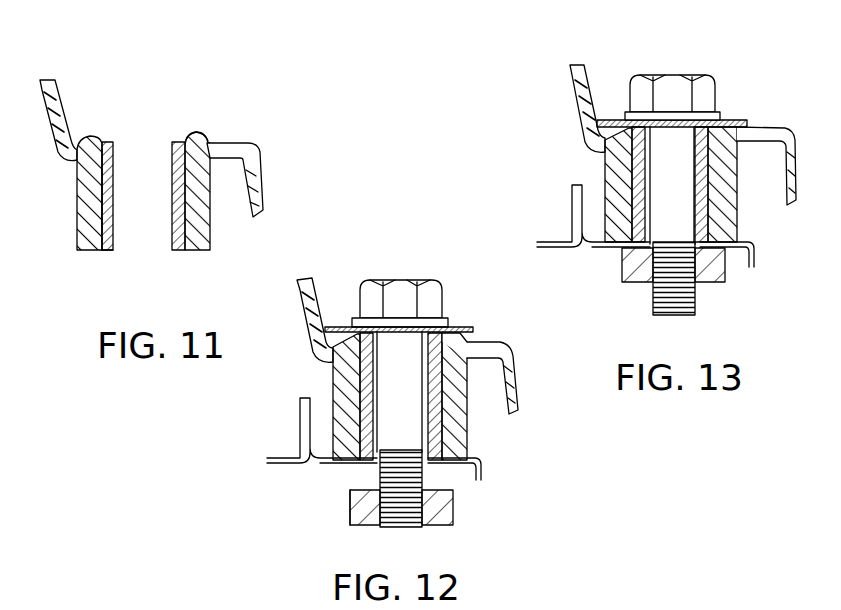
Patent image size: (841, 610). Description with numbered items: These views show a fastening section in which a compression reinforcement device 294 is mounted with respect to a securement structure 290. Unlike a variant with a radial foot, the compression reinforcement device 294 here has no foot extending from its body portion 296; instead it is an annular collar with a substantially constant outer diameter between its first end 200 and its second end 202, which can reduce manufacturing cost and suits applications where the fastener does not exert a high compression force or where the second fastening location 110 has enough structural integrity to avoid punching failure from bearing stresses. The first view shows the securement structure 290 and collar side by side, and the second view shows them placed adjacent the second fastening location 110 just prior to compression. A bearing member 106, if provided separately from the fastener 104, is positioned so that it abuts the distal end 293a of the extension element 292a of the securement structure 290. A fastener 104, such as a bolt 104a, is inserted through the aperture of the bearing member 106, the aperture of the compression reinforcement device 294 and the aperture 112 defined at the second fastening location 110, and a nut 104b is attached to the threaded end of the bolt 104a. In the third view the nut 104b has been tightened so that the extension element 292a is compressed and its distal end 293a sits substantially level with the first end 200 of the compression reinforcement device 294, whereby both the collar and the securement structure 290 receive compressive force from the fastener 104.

In FIG. 11, the securement structure 290 is at (80, 126).
In FIG. 12, the securement structure 290 is at (317, 368).
In FIG. 13, the securement structure 290 is at (612, 95).
In FIG. 11, the extension element 292a is at (188, 124).
In FIG. 12, the extension element 292a is at (487, 338).
In FIG. 13, the extension element 292a is at (762, 127).
In FIG. 11, the distal end 293a is at (200, 134).
In FIG. 12, the distal end 293a is at (340, 327).
In FIG. 13, the distal end 293a is at (726, 120).
In FIG. 11, the first end 200 is at (111, 141).
In FIG. 12, the first end 200 is at (401, 396).
In FIG. 13, the first end 200 is at (669, 76).
In FIG. 11, the body portion 296 is at (116, 216).
In FIG. 11, the second end 202 is at (112, 252).
In FIG. 11, the compression reinforcement device 294 is at (128, 252).
In FIG. 12, the compression reinforcement device 294 is at (382, 401).
In FIG. 13, the compression reinforcement device 294 is at (655, 188).
In FIG. 12, the fastener 104 is at (425, 397).
In FIG. 13, the fastener 104 is at (724, 213).
In FIG. 12, the bolt 104a is at (398, 280).
In FIG. 12, the nut 104b is at (453, 507).
In FIG. 13, the nut 104b is at (726, 283).
In FIG. 12, the bearing member 106 is at (452, 318).
In FIG. 12, the second fastening location 110 is at (332, 463).
In FIG. 13, the second fastening location 110 is at (645, 226).
In FIG. 12, the aperture 112 is at (350, 504).